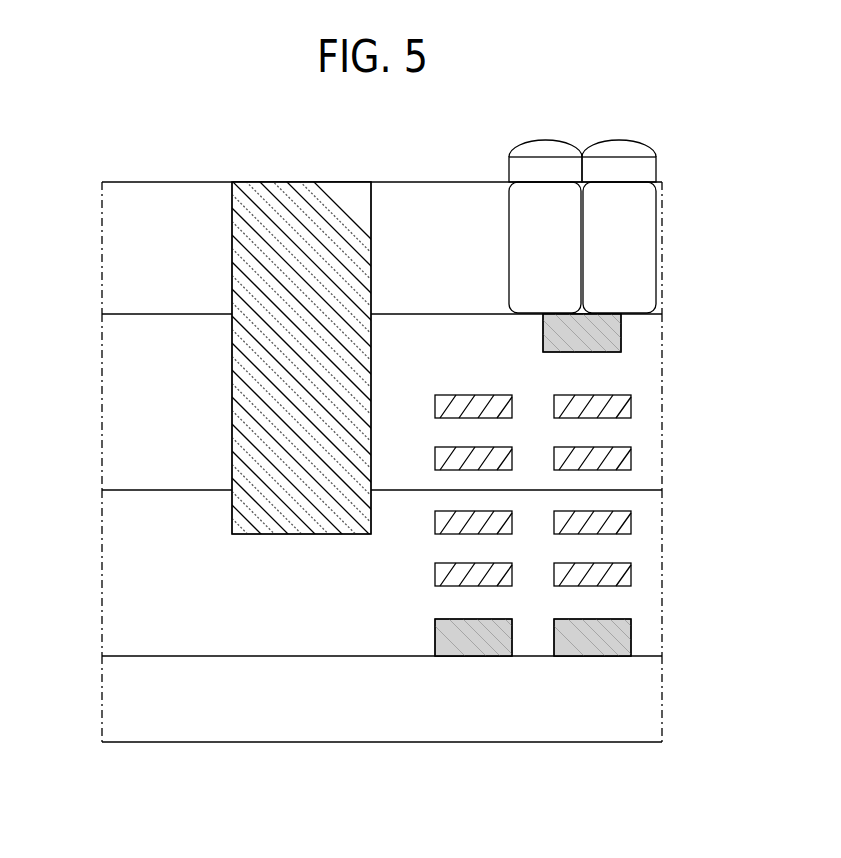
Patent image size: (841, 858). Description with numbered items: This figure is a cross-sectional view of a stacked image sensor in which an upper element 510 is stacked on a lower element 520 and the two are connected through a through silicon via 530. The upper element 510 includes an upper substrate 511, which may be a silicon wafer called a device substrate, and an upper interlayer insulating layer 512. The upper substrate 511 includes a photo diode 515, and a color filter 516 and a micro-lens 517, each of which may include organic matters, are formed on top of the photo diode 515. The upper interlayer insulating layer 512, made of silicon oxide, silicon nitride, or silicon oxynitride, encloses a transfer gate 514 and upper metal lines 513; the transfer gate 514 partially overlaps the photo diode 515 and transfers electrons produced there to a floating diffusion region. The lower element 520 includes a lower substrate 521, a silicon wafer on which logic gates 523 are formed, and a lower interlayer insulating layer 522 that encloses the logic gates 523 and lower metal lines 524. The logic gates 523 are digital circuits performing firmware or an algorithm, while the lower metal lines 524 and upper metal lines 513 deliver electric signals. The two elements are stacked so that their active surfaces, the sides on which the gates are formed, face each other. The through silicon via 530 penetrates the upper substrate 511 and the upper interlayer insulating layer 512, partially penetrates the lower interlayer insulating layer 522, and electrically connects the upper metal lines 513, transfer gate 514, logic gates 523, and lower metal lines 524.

The upper element 510 is at (351, 336).
The upper substrate 511 is at (149, 262).
The upper interlayer insulating layer 512 is at (382, 402).
The upper metal lines 513 is at (631, 405).
The transfer gate 514 is at (621, 334).
The photo diode 515 is at (657, 243).
The color filter 516 is at (657, 170).
The micro-lens 517 is at (657, 151).
The lower element 520 is at (351, 616).
The lower substrate 521 is at (382, 699).
The lower interlayer insulating layer 522 is at (149, 589).
The logic gates 523 is at (631, 637).
The lower metal lines 524 is at (627, 522).
The through silicon via 530 is at (288, 181).